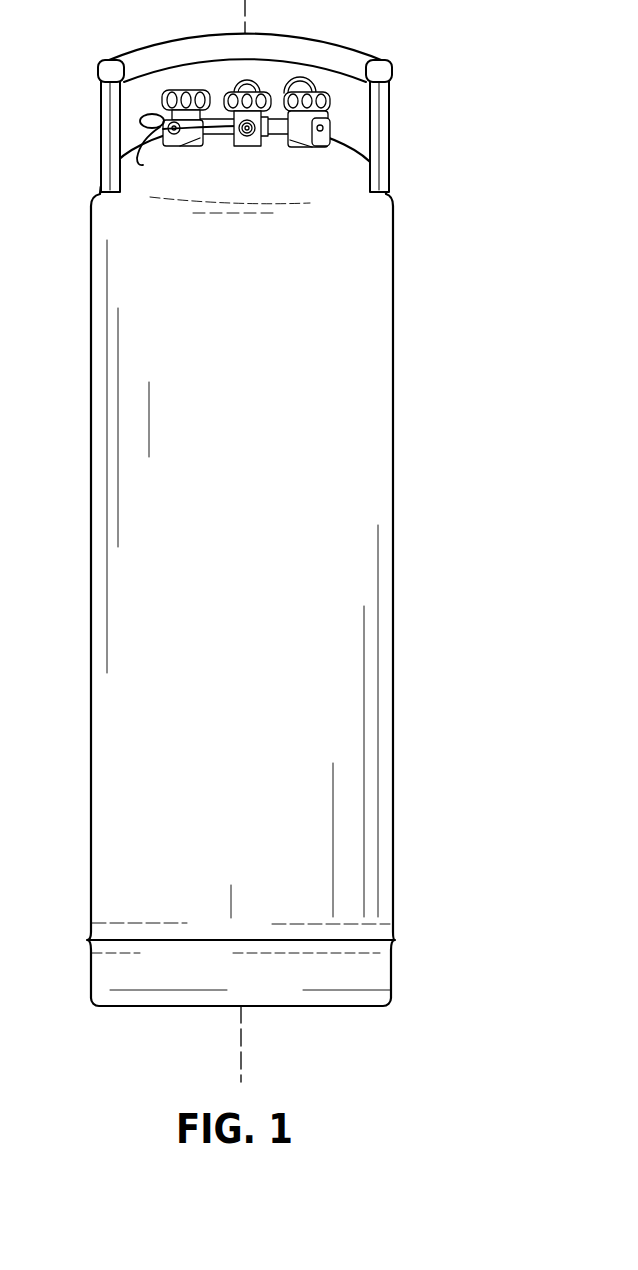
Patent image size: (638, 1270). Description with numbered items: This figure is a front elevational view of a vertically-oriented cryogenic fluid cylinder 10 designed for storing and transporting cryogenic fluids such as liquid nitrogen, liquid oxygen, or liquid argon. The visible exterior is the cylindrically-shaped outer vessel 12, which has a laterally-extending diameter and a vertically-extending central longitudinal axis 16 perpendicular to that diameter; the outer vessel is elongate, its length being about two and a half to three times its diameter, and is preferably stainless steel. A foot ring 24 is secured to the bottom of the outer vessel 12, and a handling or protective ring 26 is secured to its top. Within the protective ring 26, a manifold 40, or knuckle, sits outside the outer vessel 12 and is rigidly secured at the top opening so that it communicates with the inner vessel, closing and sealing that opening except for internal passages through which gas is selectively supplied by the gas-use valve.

The cryogenic fluid cylinder 10 is at (317, 541).
The outer vessel 12 is at (394, 488).
The central longitudinal axis 16 is at (241, 1043).
The foot ring 24 is at (391, 970).
The handling ring 26 is at (383, 57).
The manifold 40 is at (288, 136).